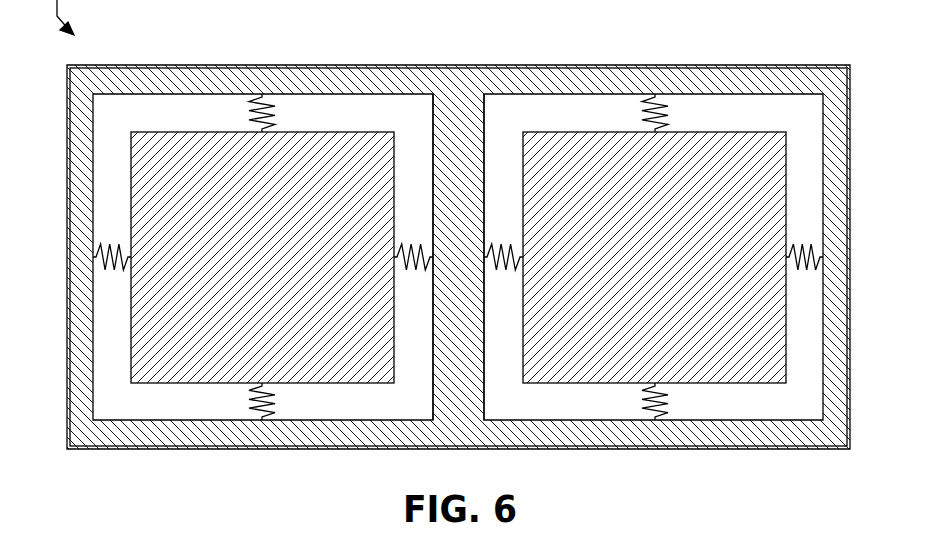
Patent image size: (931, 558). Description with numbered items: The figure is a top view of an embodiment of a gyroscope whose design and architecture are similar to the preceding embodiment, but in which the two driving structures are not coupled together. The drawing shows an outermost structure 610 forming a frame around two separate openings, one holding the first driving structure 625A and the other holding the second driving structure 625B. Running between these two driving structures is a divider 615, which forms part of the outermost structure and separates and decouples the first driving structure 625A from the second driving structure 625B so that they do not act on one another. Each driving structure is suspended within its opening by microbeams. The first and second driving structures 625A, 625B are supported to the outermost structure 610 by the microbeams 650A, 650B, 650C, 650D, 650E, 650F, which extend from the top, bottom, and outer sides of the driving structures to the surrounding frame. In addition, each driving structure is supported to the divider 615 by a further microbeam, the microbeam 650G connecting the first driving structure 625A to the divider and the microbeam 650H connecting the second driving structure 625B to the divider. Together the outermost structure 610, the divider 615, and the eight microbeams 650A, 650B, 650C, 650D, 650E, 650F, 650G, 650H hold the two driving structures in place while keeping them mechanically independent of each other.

The outermost structure 610 is at (457, 78).
The divider 615 is at (476, 265).
The first driving structure 625A is at (160, 170).
The second driving structure 625B is at (554, 167).
The microbeam 650A is at (262, 134).
The microbeam 650B is at (655, 134).
The microbeam 650C is at (784, 253).
The microbeam 650D is at (651, 381).
The microbeam 650E is at (263, 381).
The microbeam 650F is at (134, 256).
The microbeam 650G is at (392, 256).
The microbeam 650H is at (525, 253).